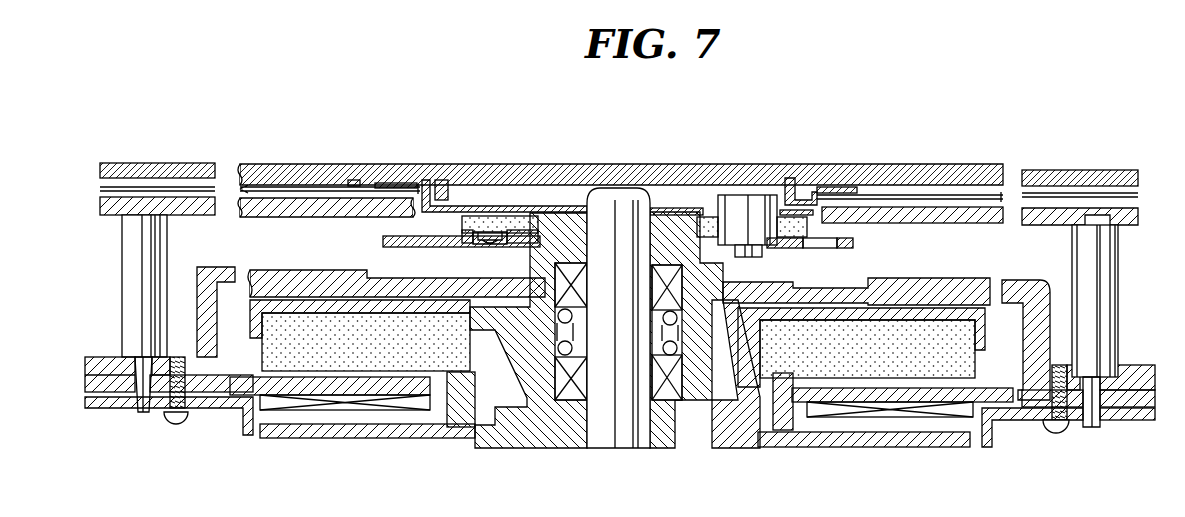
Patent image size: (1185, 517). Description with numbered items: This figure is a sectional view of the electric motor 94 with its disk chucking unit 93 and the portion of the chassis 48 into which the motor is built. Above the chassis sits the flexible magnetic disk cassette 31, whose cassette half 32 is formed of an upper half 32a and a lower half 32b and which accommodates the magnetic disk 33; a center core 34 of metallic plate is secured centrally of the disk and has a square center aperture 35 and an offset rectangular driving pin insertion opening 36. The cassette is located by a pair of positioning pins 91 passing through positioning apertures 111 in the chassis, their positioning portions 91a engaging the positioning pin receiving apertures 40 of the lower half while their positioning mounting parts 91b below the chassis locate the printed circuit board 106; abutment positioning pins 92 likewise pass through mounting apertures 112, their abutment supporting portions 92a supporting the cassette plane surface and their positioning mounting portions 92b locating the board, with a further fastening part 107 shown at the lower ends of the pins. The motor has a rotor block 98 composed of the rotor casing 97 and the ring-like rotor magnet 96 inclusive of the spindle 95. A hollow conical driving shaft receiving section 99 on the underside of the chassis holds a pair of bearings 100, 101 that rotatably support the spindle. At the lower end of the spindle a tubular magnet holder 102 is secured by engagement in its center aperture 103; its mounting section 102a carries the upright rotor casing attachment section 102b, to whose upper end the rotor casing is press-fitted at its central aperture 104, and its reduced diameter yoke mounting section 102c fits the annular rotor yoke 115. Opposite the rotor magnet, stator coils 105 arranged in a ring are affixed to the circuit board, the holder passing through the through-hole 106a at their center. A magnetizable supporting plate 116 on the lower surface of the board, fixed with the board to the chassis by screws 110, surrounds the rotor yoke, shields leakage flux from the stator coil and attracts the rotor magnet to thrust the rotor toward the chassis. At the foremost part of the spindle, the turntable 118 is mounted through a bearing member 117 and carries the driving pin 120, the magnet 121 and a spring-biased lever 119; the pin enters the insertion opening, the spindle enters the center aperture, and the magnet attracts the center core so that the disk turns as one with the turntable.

The flexible magnetic disk cassette 31 is at (383, 153).
The cassette half 32 is at (151, 149).
The upper half 32a is at (125, 165).
The lower half 32b is at (188, 205).
The magnetic disk 33 is at (258, 205).
The center core 34 is at (430, 168).
The center aperture 35 is at (618, 304).
The driving pin insertion opening 36 is at (772, 205).
The positioning pin receiving aperture 40 is at (1090, 216).
The chassis 48 is at (107, 360).
The positioning pin 91 is at (1114, 352).
The positioning portion 91a is at (1113, 256).
The positioning mounting part 91b is at (1092, 430).
The abutment positioning pin 92 is at (156, 334).
The abutment supporting portion 92a is at (162, 226).
The positioning mounting portion 92b is at (146, 414).
The disk chucking unit 93 is at (857, 244).
The electric motor 94 is at (488, 462).
The spindle 95 is at (625, 437).
The rotor magnet 96 is at (273, 356).
The rotor casing 97 is at (940, 305).
The rotor block 98 is at (555, 437).
The driving shaft receiving section 99 is at (735, 402).
The bearing 100 is at (693, 283).
The bearing 101 is at (690, 382).
The magnet holder 102 is at (720, 364).
The mounting section 102a is at (660, 442).
The rotor casing attachment section 102b is at (755, 336).
The yoke mounting section 102c is at (775, 434).
The center aperture 103 is at (590, 420).
The central aperture 104 is at (470, 282).
The stator coil 105 is at (285, 400).
The printed circuit board 106 is at (365, 392).
The through-hole 106a is at (812, 386).
The nut 107 is at (145, 392).
The screw 110 is at (172, 426).
The positioning aperture 111 is at (1097, 348).
The mounting aperture 112 is at (163, 297).
The rotor yoke 115 is at (435, 440).
The supporting plate 116 is at (212, 409).
The bearing member 117 is at (670, 226).
The turntable 118 is at (383, 241).
The lever 119 is at (793, 250).
The driving pin 120 is at (742, 205).
The magnet 121 is at (505, 220).